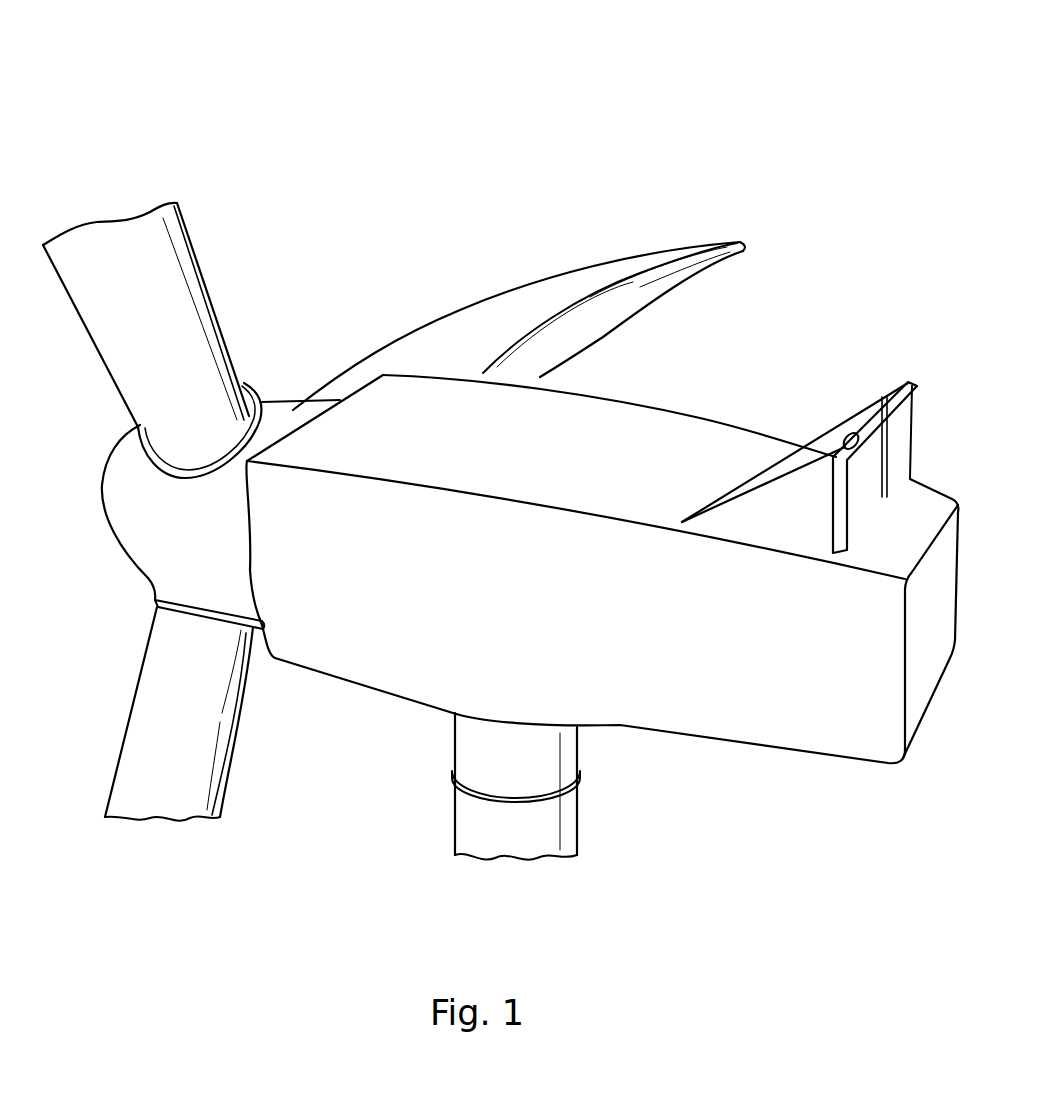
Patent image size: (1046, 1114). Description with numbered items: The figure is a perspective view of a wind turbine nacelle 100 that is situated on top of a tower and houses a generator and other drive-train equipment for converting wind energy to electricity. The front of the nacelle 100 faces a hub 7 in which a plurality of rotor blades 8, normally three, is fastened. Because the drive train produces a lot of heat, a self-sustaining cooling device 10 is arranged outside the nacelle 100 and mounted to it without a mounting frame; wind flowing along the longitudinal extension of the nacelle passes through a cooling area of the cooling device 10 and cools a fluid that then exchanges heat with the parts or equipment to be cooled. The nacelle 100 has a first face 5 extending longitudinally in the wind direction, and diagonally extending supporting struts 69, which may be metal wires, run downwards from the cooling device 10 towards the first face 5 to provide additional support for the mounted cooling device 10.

The wind turbine nacelle 100 is at (527, 146).
The first face 5 is at (383, 417).
The hub 7 is at (115, 488).
The rotor blades 8 is at (150, 258).
The cooling device 10 is at (901, 343).
The supporting struts 69 is at (803, 432).